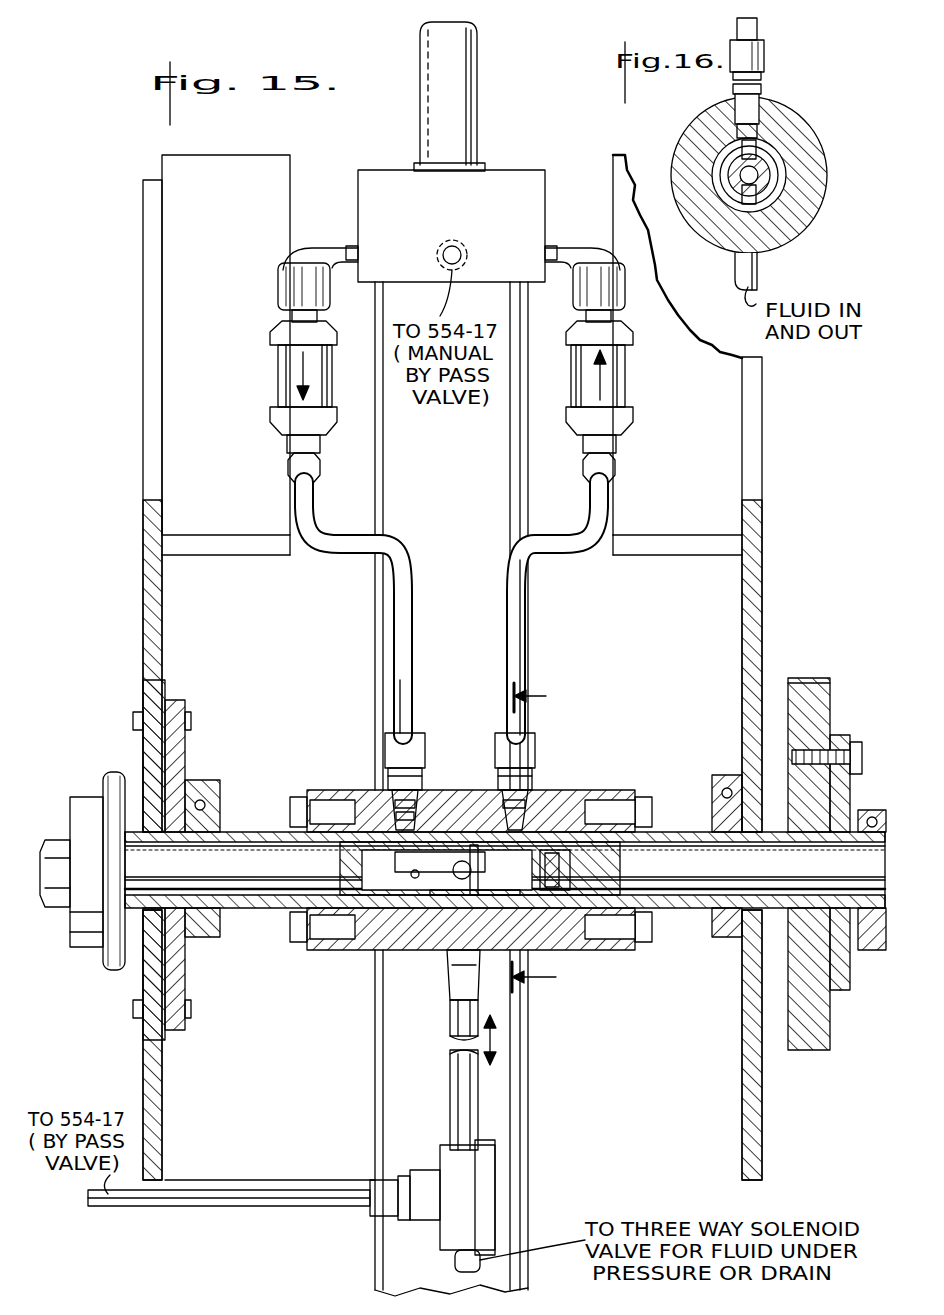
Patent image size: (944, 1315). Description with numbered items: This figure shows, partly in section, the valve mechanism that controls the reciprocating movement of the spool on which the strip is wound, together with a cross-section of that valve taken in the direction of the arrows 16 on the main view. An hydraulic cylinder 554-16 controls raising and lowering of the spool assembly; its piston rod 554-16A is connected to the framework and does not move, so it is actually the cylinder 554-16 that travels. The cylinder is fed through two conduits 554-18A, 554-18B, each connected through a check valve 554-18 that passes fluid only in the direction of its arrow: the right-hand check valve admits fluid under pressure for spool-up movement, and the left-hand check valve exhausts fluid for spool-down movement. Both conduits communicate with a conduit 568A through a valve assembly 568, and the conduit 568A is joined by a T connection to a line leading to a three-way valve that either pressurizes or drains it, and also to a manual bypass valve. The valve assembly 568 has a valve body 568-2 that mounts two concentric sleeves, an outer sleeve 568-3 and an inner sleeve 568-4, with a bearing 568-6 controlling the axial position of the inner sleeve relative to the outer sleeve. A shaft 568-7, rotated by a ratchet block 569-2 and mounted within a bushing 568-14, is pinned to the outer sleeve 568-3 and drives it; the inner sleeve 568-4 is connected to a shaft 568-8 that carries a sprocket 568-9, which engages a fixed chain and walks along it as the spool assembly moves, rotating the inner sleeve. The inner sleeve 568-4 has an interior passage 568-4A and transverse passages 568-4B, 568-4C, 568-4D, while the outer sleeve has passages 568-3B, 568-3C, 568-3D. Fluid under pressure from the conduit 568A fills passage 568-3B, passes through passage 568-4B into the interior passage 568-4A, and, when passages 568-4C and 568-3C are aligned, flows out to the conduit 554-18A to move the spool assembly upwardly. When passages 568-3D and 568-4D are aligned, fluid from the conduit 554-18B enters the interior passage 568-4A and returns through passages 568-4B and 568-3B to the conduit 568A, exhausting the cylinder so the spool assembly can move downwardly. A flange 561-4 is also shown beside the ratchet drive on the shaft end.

In FIG. 15, the piston rod 554-16A is at (470, 42).
In FIG. 15, the hydraulic cylinder 554-16 is at (515, 176).
In FIG. 15, the check valve 554-18 is at (645, 392).
In FIG. 15, the conduit 554-18A is at (515, 580).
In FIG. 16, the conduit 554-18A is at (750, 24).
In FIG. 15, the conduit 554-18B is at (433, 555).
In FIG. 15, the section arrows 16- 16 is at (548, 837).
In FIG. 15, the valve assembly 568 is at (312, 990).
In FIG. 15, the valve body 568-2 is at (560, 930).
In FIG. 15, the outer sleeve 568-3 is at (530, 860).
In FIG. 16, the outer sleeve 568-3 is at (765, 160).
In FIG. 15, the passage 568-3B is at (438, 760).
In FIG. 15, the passage 568-3C is at (516, 806).
In FIG. 16, the passage 568-3C is at (752, 140).
In FIG. 15, the passage 568-3D is at (405, 806).
In FIG. 15, the inner sleeve 568-4 is at (405, 792).
In FIG. 16, the inner sleeve 568-4 is at (758, 172).
In FIG. 15, the interior passage 568-4A is at (425, 915).
In FIG. 15, the transverse passage 568-4B is at (474, 845).
In FIG. 15, the transverse passage 568-4C is at (515, 820).
In FIG. 16, the transverse passage 568-4C is at (756, 195).
In FIG. 15, the transverse passage 568-4D is at (405, 816).
In FIG. 15, the bearing 568-6 is at (462, 862).
In FIG. 15, the shaft 568-7 is at (880, 820).
In FIG. 15, the shaft 568-8 is at (230, 860).
In FIG. 15, the sprocket 568-9 is at (90, 805).
In FIG. 15, the bushing 568-14 is at (618, 840).
In FIG. 15, the conduit 568A is at (452, 1076).
In FIG. 15, the flange 561-4 is at (810, 678).
In FIG. 15, the ratchet block 569-2 is at (870, 940).